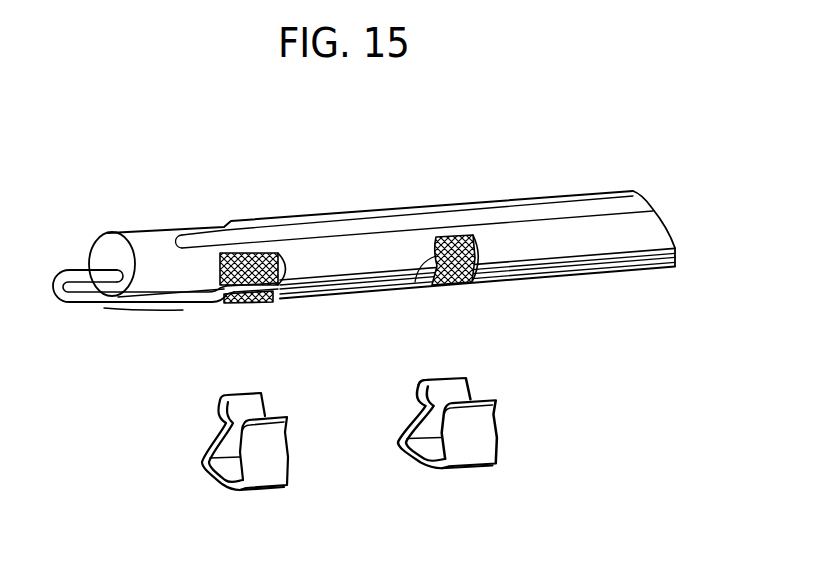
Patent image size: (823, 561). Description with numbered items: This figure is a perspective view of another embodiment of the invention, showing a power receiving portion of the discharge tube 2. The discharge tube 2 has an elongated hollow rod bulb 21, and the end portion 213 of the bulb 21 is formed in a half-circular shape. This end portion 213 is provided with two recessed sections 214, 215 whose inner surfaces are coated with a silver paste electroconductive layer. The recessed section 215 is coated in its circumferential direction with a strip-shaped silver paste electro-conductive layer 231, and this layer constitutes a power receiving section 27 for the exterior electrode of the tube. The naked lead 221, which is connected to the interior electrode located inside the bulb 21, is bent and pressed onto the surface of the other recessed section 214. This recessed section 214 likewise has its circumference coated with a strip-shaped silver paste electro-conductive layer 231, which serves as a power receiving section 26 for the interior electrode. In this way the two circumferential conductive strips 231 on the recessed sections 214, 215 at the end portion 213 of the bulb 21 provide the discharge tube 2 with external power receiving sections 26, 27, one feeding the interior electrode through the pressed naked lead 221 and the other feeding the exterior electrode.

The discharge tube 2 is at (346, 263).
The bulb 21 is at (598, 233).
The end portion 213 is at (150, 265).
The naked lead 221 is at (62, 310).
The power receiving section 26 is at (215, 258).
The strip-shaped silver paste electro-conductive layer 231 is at (259, 256).
The power receiving section 27 is at (425, 283).
The recessed section 214 is at (294, 296).
The recessed section 215 is at (498, 280).